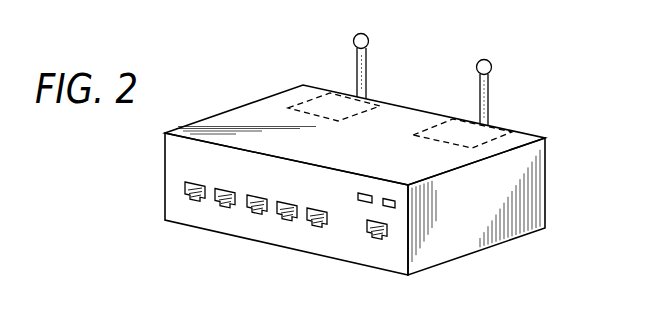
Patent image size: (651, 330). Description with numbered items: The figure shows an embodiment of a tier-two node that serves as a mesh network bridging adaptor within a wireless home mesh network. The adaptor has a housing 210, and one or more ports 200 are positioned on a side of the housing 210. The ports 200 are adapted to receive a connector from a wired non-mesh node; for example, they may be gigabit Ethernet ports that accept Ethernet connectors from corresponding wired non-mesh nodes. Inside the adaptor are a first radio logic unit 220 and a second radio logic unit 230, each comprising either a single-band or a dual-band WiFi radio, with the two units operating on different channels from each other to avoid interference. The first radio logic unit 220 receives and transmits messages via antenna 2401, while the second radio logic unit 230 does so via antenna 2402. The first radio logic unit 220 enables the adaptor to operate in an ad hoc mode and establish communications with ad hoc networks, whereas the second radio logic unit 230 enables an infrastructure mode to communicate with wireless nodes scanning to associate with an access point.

The ports 200 is at (187, 187).
The housing 210 is at (248, 224).
The first radio logic unit 220 is at (312, 100).
The second radio logic unit 230 is at (490, 137).
The antenna 2401 is at (366, 72).
The antenna 2402 is at (488, 86).